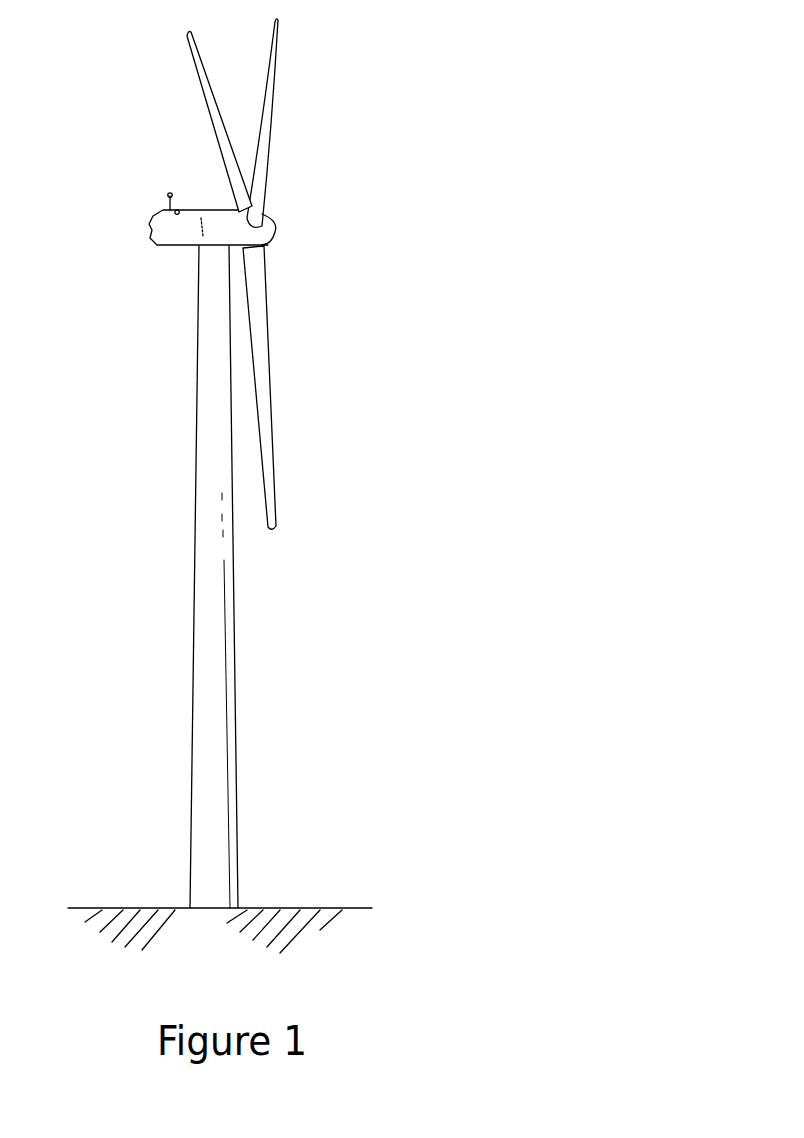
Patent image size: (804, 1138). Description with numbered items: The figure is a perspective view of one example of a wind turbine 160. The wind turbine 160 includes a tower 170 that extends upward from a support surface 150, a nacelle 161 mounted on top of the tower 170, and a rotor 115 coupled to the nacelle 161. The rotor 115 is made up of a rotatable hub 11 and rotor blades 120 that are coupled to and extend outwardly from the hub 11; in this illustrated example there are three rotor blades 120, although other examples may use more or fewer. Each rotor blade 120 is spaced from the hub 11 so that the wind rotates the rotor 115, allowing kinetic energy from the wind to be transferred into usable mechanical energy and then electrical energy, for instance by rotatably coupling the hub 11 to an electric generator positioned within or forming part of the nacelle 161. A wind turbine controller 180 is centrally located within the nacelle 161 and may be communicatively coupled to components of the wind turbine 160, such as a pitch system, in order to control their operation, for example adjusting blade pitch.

The wind turbine 160 is at (372, 82).
The support surface 150 is at (133, 908).
The tower 170 is at (203, 668).
The nacelle 161 is at (178, 247).
The wind turbine controller 180 is at (201, 218).
The rotor 115 is at (278, 267).
The rotor blade 120 is at (270, 52).
The hub 11 is at (273, 233).